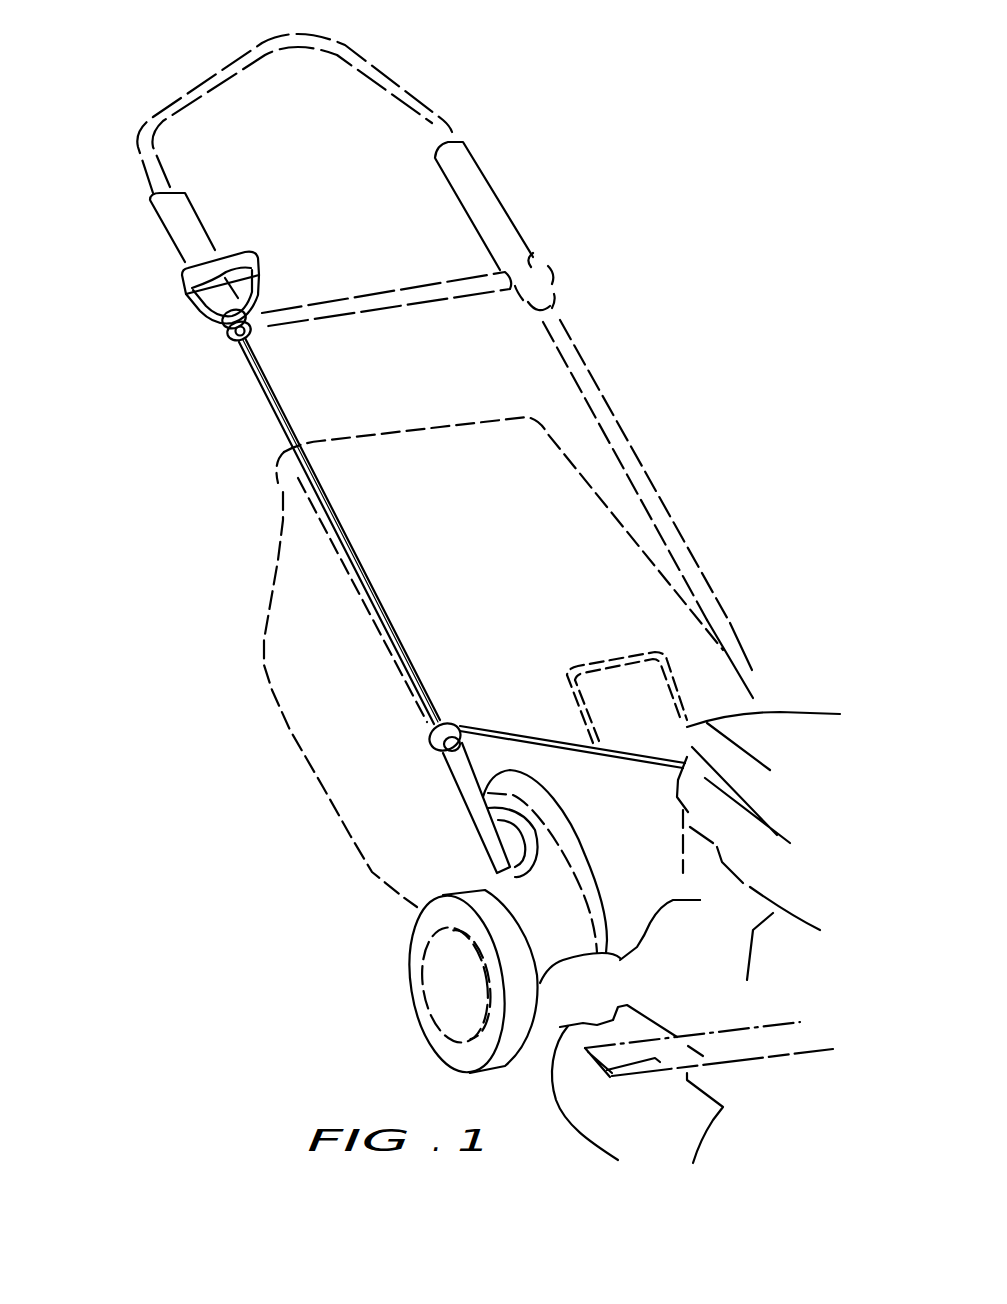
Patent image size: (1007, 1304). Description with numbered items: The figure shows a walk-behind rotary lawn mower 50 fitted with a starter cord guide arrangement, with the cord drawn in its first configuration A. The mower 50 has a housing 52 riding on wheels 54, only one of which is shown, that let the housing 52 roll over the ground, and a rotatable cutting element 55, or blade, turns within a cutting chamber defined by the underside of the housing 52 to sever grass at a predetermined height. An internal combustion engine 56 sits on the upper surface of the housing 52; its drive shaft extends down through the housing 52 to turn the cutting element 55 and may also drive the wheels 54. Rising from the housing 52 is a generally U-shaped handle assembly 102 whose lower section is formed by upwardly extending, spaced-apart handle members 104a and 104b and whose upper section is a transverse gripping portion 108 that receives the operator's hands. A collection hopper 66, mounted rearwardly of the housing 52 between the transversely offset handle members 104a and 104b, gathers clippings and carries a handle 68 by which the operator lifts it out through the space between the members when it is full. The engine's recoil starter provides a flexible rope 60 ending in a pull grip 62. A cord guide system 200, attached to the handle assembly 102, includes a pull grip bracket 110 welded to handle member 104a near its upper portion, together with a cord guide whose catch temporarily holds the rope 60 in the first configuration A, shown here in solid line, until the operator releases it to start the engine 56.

The walk-behind rotary lawn mower 50 is at (655, 282).
The housing 52 is at (572, 1005).
The wheels 54 is at (410, 935).
The cutting element 55 is at (723, 1030).
The internal combustion engine 56 is at (770, 758).
The rope 60 is at (342, 520).
The pull grip 62 is at (180, 297).
The collection hopper 66 is at (403, 430).
The handle 68 is at (587, 663).
The handle assembly 102 is at (514, 222).
The first handle member 104a is at (262, 410).
The second handle member 104b is at (637, 453).
The gripping portion 108 is at (415, 85).
The pull grip bracket 110 is at (232, 343).
The cord guide system 200 is at (428, 745).
The first configuration A is at (500, 735).